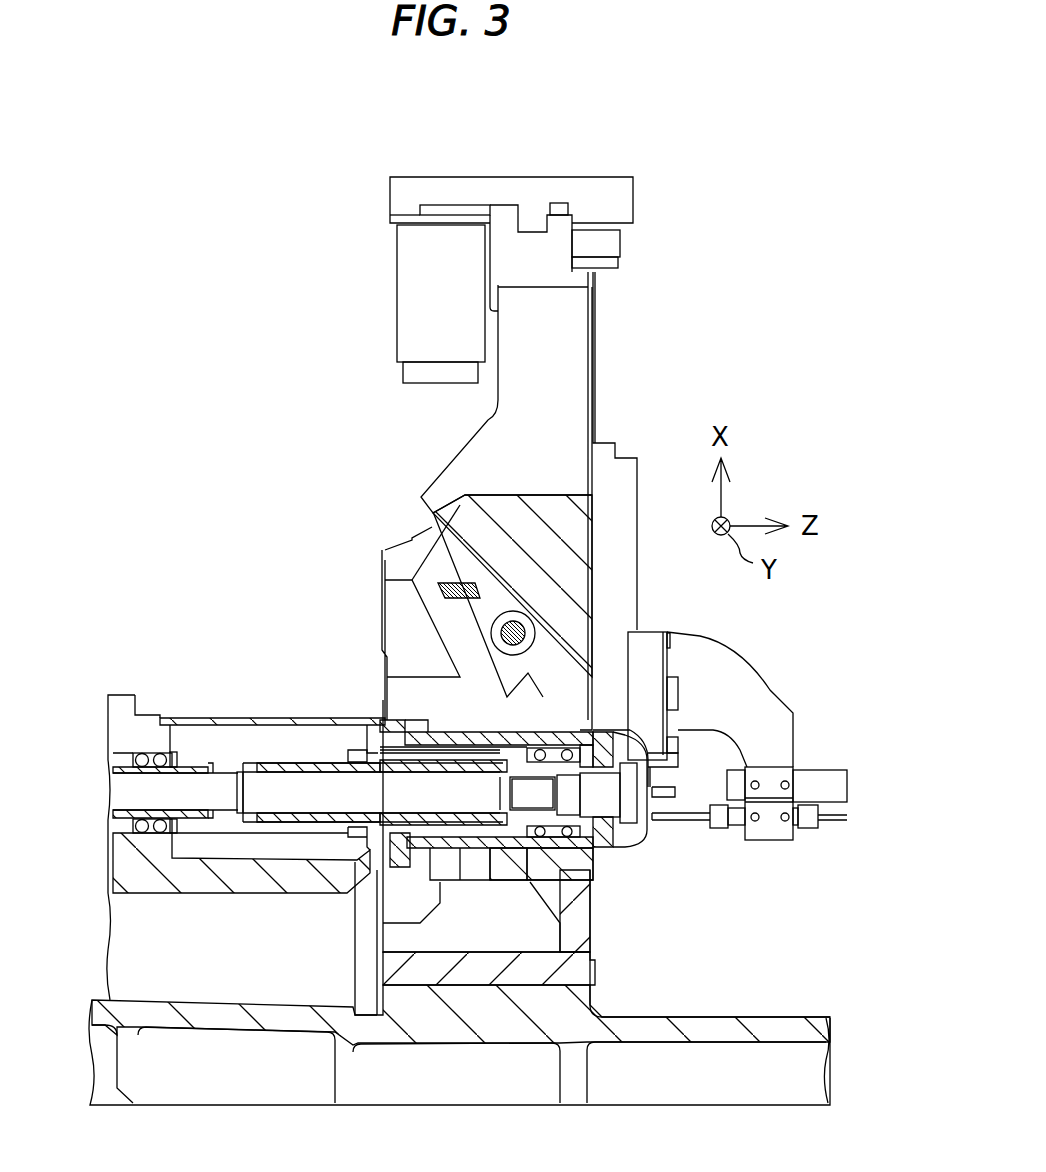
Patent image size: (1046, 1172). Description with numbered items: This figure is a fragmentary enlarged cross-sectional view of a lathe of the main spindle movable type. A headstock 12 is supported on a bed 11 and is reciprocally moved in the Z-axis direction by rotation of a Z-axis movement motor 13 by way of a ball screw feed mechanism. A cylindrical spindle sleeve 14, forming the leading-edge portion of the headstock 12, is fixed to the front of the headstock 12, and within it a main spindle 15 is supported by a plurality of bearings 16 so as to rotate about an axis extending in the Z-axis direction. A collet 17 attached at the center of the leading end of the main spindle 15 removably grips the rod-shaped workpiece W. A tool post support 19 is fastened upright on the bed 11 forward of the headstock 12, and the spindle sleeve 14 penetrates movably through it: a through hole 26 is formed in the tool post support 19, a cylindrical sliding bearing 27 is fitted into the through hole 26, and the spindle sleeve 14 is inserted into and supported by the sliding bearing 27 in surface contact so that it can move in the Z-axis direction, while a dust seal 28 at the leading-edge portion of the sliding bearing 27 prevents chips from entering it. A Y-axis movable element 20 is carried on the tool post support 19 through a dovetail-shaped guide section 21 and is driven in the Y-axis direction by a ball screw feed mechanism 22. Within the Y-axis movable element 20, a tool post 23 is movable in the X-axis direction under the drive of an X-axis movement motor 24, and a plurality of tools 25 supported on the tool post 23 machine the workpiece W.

The bed 11 is at (699, 1027).
The headstock 12 is at (187, 717).
The Z-axis movement motor 13 is at (248, 857).
The spindle sleeve 14 is at (462, 880).
The main spindle 15 is at (420, 868).
The bearings 16 is at (140, 836).
The collet 17 is at (640, 826).
The tool post support 19 is at (590, 947).
The Y-axis movable element 20 is at (470, 447).
The dovetail-shaped guide section 21 is at (467, 617).
The ball screw feed mechanism 22 is at (491, 633).
The tool post 23 is at (628, 571).
The X-axis movement motor 24 is at (417, 300).
The tools 25 is at (663, 772).
The through hole 26 is at (473, 732).
The sliding bearing 27 is at (495, 880).
The dust seal 28 is at (545, 882).
The workpiece W is at (670, 801).